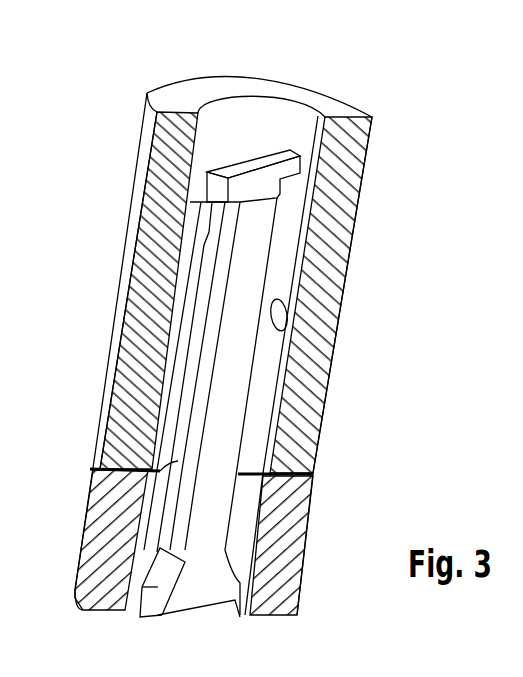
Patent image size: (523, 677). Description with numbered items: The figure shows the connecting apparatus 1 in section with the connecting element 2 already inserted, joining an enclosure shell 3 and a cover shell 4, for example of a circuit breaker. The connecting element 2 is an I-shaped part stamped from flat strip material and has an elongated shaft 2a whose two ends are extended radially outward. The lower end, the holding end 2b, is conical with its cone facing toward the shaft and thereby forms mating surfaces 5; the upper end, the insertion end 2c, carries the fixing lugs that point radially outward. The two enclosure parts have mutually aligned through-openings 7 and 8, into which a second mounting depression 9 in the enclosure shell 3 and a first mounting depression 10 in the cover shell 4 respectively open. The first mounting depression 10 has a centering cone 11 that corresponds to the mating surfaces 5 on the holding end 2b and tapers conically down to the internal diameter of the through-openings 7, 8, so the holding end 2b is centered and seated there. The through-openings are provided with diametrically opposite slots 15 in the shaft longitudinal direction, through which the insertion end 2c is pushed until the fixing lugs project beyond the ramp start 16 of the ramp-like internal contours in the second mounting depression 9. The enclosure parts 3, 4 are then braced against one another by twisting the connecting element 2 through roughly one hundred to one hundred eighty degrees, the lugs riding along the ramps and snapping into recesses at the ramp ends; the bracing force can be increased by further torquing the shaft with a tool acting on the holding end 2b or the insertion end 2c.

The connecting apparatus 1 is at (412, 302).
The connecting element 2 is at (215, 303).
The shaft 2a is at (223, 402).
The holding end 2b is at (190, 595).
The insertion end 2c is at (270, 158).
The enclosure shell 3 is at (356, 229).
The cover shell 4 is at (302, 587).
The mating surfaces 5 is at (130, 572).
The through-opening 7 is at (263, 400).
The through-opening 8 is at (247, 497).
The second mounting depression 9 is at (278, 128).
The first mounting depression 10 is at (132, 612).
The centering cone 11 is at (157, 558).
The slots 15 is at (288, 323).
The ramp start 16 is at (207, 196).